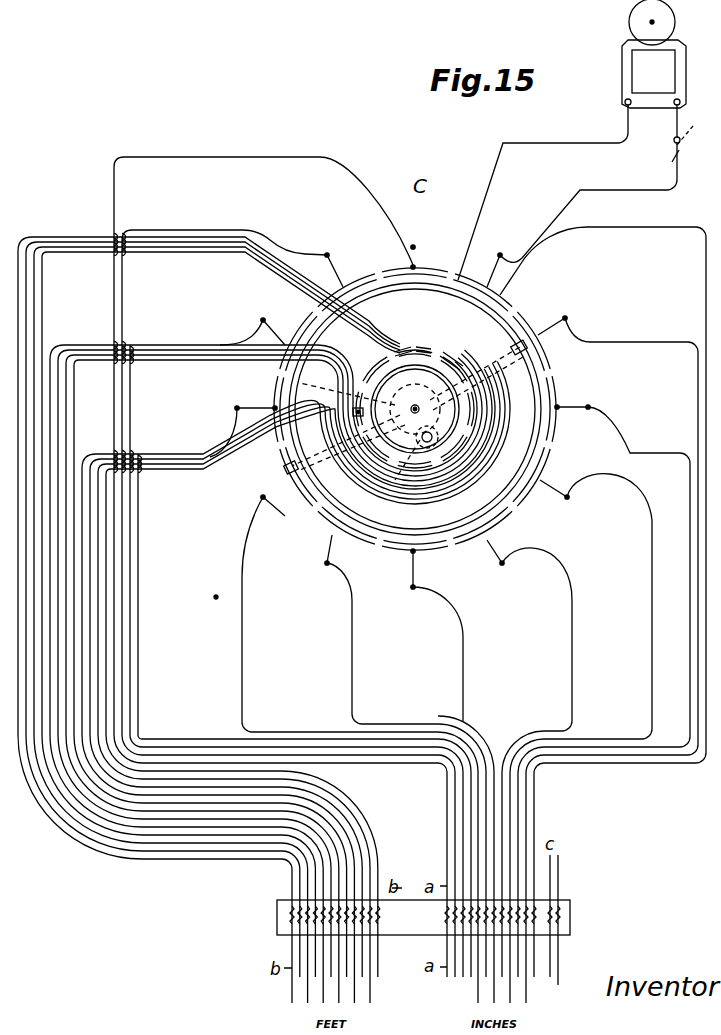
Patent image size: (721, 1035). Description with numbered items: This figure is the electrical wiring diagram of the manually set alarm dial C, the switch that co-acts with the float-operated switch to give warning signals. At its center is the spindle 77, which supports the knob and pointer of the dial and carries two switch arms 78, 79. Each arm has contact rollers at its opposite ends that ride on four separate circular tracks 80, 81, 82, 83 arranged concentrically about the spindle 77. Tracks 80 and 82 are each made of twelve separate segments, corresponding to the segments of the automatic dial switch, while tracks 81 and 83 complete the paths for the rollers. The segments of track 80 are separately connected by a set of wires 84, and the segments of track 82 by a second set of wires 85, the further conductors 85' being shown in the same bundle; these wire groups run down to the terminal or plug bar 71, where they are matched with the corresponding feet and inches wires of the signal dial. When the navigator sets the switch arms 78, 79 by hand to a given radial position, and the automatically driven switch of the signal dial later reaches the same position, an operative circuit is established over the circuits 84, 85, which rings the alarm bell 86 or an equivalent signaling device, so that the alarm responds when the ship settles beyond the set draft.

The terminal bar 71 is at (277, 917).
The spindle 77 is at (409, 410).
The switch arm 78 is at (353, 411).
The switch arm 79 is at (296, 468).
The circular track 80 is at (408, 349).
The circular track 81 is at (445, 356).
The circular track 82 is at (422, 270).
The circular track 83 is at (415, 409).
The wires 84 is at (372, 194).
The wires 85 is at (264, 660).
The conductors 85' is at (209, 482).
The alarm bell 86 is at (575, 143).